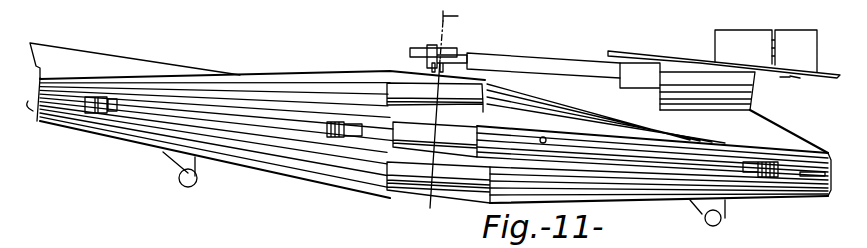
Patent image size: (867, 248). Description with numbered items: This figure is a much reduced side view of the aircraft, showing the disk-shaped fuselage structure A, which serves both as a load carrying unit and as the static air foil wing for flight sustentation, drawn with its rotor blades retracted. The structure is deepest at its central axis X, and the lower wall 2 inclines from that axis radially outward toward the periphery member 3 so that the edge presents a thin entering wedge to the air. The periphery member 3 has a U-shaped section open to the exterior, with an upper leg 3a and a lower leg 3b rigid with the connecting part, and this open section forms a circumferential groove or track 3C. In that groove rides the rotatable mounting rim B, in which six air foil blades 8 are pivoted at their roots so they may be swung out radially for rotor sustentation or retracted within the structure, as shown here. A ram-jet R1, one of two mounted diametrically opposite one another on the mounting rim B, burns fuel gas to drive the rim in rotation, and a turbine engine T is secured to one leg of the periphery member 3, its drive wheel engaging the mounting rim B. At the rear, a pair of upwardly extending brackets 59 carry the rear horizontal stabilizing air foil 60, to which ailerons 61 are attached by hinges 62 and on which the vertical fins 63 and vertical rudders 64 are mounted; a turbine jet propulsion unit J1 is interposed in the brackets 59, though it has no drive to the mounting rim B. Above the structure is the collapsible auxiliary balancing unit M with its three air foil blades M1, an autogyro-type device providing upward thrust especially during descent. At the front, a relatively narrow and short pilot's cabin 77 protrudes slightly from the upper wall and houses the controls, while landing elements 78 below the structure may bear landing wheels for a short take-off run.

The pilot's cabin 77 is at (73, 53).
The fuselage structure A is at (304, 68).
The lower wall 2 is at (218, 159).
The upper leg of periphery member 3a is at (301, 103).
The air foil blade 8 is at (145, 112).
The landing element 78 is at (176, 176).
The groove or track 3C is at (368, 122).
The turbine engine T is at (397, 83).
The axis X is at (451, 106).
The auxiliary balancing unit M is at (458, 52).
The air foil blades of balancing unit M1 is at (533, 62).
The turbine jet propulsion unit J1 is at (410, 183).
The mounting rim B is at (556, 113).
The periphery member 3 is at (593, 133).
The ram-jet R1 is at (519, 109).
The lower leg of periphery member 3b is at (792, 193).
The bracket 59 is at (707, 116).
The rear horizontal stabilizing air foil 60 is at (650, 52).
The vertical fin 63 is at (720, 28).
The vertical rudder 64 is at (805, 20).
The aileron 61 is at (796, 78).
The hinge 62 is at (797, 73).